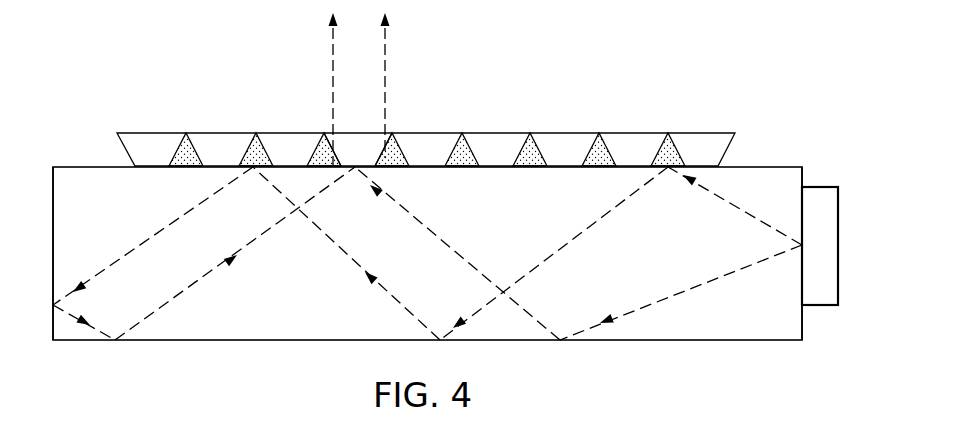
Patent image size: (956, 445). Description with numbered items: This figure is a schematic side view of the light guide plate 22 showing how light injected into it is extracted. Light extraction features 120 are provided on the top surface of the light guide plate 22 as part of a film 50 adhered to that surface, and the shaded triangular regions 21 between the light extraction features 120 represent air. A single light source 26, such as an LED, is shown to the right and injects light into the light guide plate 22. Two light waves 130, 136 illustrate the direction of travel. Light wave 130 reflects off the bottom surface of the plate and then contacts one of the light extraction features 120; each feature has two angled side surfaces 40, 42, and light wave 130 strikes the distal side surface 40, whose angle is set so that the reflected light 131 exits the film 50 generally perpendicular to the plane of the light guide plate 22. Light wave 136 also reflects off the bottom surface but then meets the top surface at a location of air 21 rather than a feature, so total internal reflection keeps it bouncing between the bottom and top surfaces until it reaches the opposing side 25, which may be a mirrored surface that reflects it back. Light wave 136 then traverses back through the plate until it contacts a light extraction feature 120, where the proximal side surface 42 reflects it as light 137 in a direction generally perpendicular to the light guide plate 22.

The shaded triangular regions 21 is at (545, 156).
The light guide plate 22 is at (75, 165).
The opposing side 25 is at (55, 218).
The light source 26 is at (820, 307).
The distal side surface 40 is at (340, 162).
The proximal side surface 42 is at (370, 160).
The film 50 is at (770, 137).
The light extraction features 120 is at (361, 140).
The light wave 130 is at (437, 238).
The light 131 is at (330, 62).
The light wave 136 is at (203, 277).
The light 137 is at (387, 62).